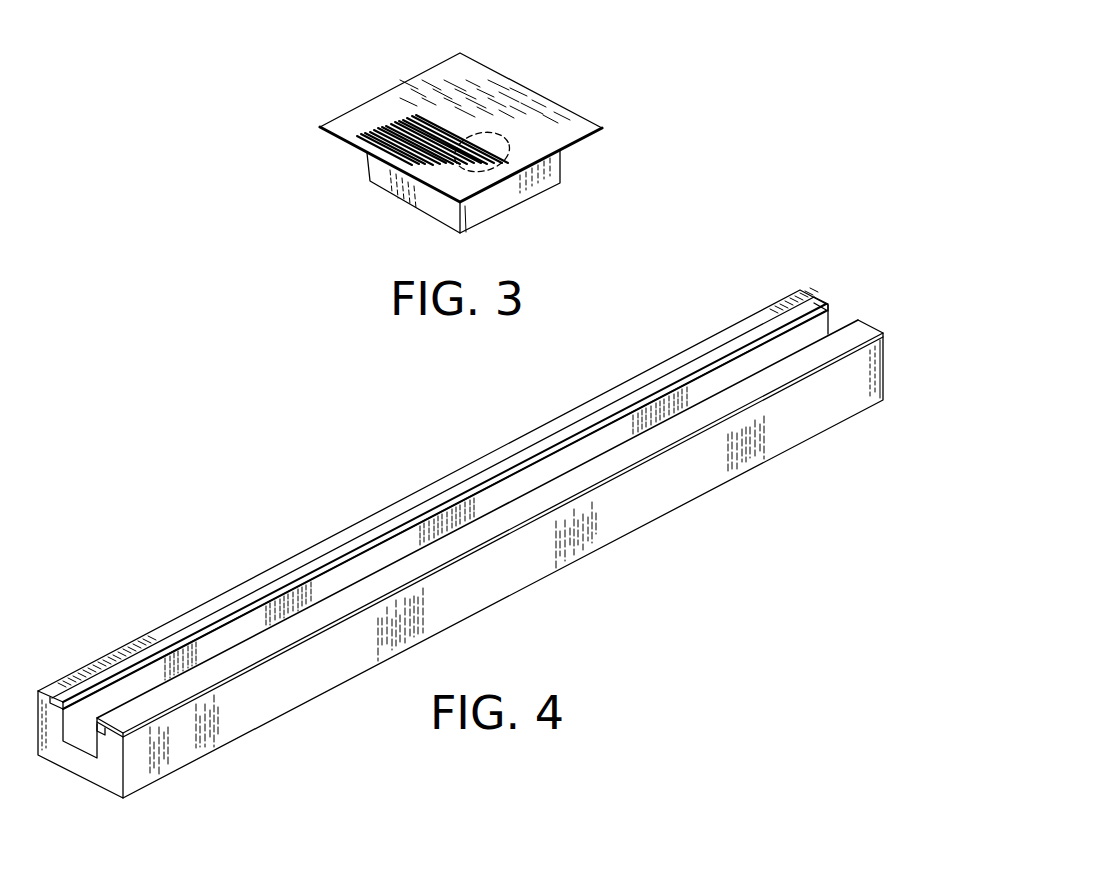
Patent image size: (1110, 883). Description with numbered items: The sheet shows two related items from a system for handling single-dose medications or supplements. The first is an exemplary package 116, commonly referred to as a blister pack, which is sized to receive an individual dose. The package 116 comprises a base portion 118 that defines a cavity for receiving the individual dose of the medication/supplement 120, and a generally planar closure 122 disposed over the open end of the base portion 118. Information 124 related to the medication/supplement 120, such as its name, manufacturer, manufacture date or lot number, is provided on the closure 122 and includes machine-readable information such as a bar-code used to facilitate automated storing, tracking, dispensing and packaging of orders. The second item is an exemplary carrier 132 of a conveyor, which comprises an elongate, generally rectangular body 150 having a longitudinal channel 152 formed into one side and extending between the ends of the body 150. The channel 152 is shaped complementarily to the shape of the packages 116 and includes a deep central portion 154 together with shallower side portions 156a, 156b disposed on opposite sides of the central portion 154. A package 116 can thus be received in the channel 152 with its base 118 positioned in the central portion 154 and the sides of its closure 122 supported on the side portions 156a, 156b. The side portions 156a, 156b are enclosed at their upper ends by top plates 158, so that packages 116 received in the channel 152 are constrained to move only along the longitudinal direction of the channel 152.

In FIG. 3, the package 116 is at (454, 127).
In FIG. 3, the base portion 118 is at (375, 178).
In FIG. 3, the medication/supplement 120 is at (489, 131).
In FIG. 3, the closure 122 is at (475, 67).
In FIG. 3, the information 124 is at (377, 123).
In FIG. 4, the carrier 132 is at (460, 538).
In FIG. 4, the body 150 is at (460, 538).
In FIG. 4, the channel 152 is at (465, 493).
In FIG. 4, the central portion 154 is at (85, 742).
In FIG. 4, the side portion 156a is at (193, 648).
In FIG. 4, the side portion 156b is at (103, 722).
In FIG. 4, the top plate 158 is at (460, 478).